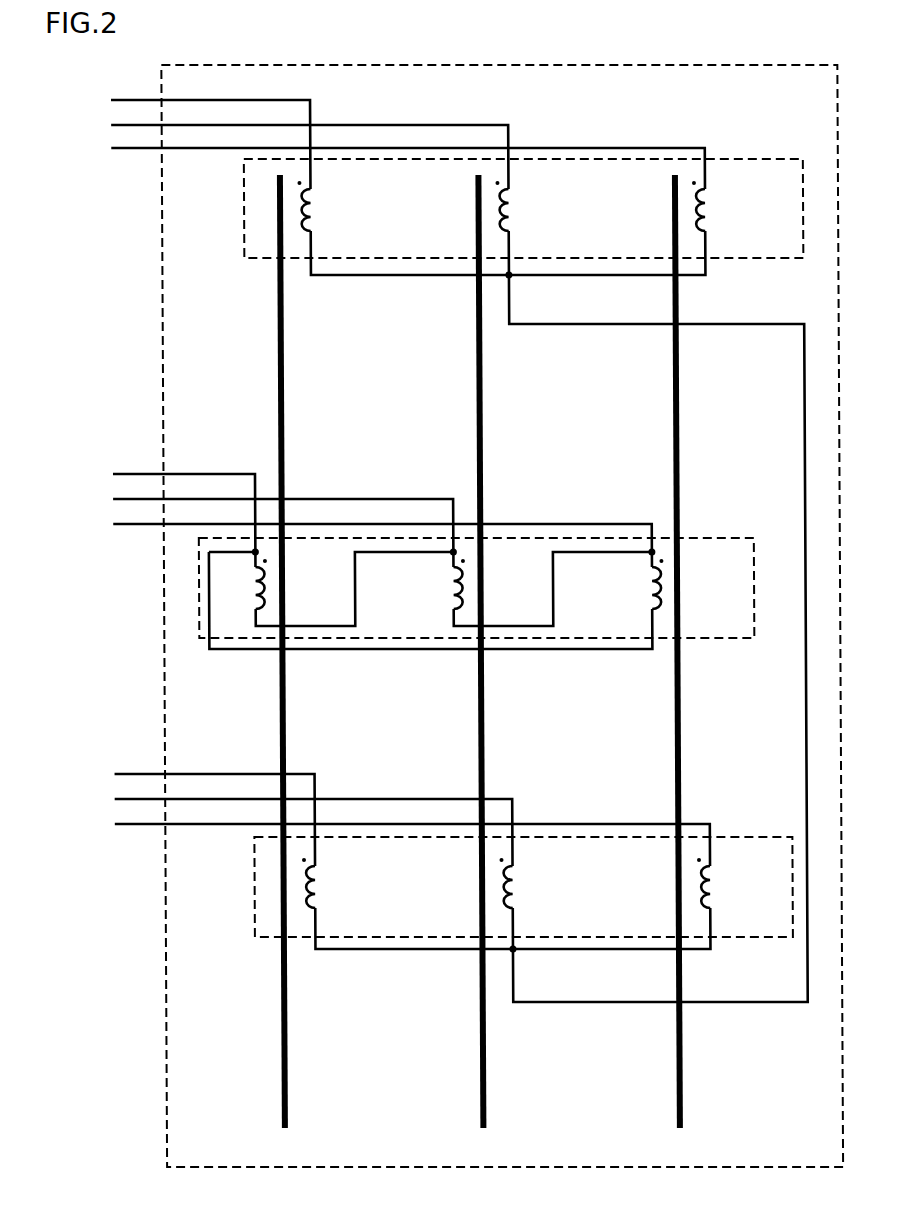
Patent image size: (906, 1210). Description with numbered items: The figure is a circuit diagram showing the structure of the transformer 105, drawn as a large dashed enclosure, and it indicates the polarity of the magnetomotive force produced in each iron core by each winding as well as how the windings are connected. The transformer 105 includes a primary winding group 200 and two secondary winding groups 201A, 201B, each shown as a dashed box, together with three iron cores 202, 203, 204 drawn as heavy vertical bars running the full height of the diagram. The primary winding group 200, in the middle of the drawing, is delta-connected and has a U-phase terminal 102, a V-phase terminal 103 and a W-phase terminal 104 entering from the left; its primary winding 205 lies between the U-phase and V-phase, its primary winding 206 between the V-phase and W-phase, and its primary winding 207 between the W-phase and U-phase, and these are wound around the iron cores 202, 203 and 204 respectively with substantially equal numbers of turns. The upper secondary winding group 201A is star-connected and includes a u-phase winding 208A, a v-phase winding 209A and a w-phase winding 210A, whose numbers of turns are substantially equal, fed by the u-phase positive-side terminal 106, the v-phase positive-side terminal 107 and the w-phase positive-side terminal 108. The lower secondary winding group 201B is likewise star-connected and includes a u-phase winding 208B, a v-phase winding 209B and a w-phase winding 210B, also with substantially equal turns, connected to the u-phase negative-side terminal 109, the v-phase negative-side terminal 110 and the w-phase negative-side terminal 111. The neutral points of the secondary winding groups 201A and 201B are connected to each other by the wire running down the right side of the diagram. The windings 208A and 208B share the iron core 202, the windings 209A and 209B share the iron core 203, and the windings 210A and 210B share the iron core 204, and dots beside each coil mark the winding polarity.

The U-phase terminal 102 is at (165, 507).
The V-phase terminal 103 is at (265, 519).
The W-phase terminal 104 is at (364, 532).
The transformer 105 is at (212, 65).
The u-phase positive-side terminal 106 is at (192, 138).
The v-phase positive-side terminal 107 is at (441, 557).
The w-phase positive-side terminal 108 is at (390, 162).
The u-phase negative-side terminal 109 is at (196, 814).
The v-phase negative-side terminal 110 is at (295, 826).
The w-phase negative-side terminal 111 is at (394, 839).
The primary winding group 200 is at (727, 638).
The secondary winding group 201A is at (726, 259).
The secondary winding group 201B is at (725, 938).
The iron core 202 is at (281, 1112).
The iron core 203 is at (480, 1112).
The iron core 204 is at (676, 1112).
The primary winding 205 is at (262, 584).
The primary winding 206 is at (460, 584).
The primary winding 207 is at (658, 584).
The u-phase winding 208A is at (316, 207).
The v-phase winding 209A is at (514, 207).
The w-phase winding 210A is at (711, 207).
The u-phase winding 208B is at (313, 886).
The v-phase winding 209B is at (511, 886).
The w-phase winding 210B is at (708, 886).